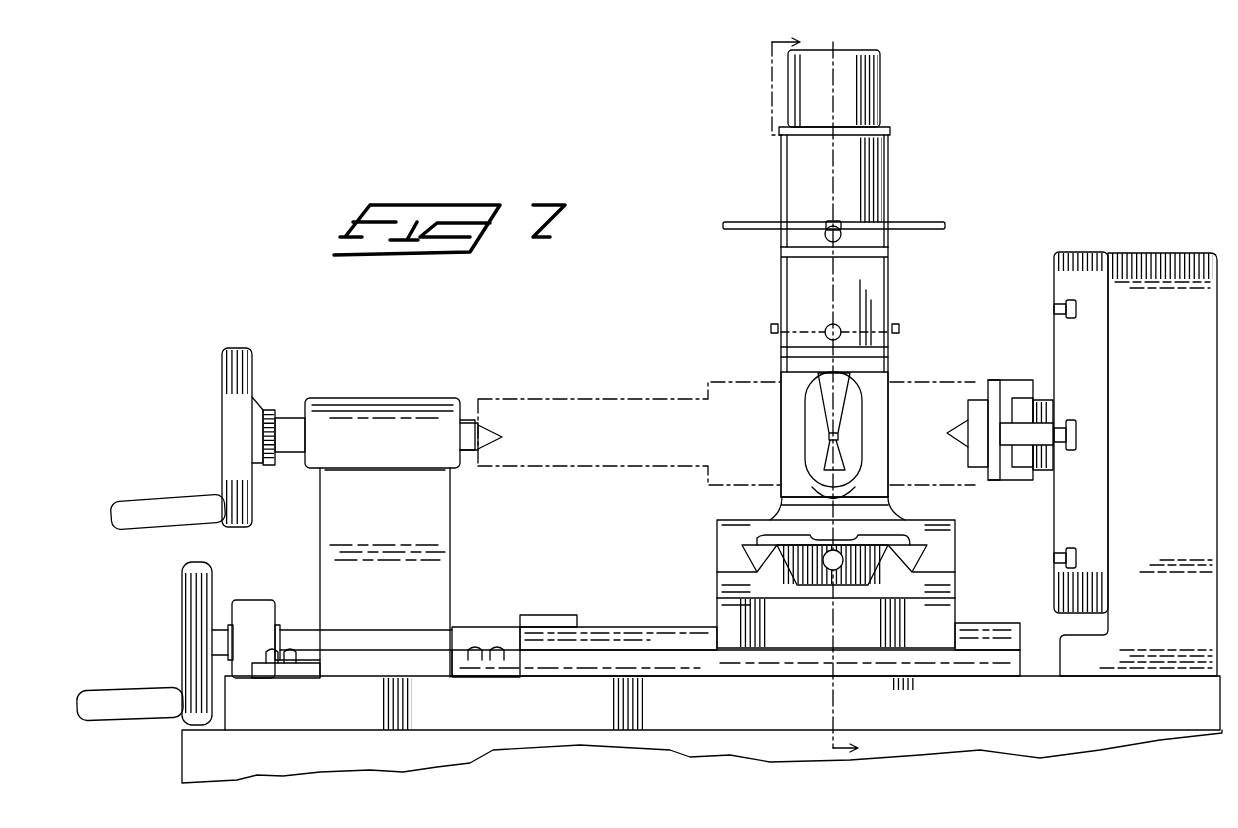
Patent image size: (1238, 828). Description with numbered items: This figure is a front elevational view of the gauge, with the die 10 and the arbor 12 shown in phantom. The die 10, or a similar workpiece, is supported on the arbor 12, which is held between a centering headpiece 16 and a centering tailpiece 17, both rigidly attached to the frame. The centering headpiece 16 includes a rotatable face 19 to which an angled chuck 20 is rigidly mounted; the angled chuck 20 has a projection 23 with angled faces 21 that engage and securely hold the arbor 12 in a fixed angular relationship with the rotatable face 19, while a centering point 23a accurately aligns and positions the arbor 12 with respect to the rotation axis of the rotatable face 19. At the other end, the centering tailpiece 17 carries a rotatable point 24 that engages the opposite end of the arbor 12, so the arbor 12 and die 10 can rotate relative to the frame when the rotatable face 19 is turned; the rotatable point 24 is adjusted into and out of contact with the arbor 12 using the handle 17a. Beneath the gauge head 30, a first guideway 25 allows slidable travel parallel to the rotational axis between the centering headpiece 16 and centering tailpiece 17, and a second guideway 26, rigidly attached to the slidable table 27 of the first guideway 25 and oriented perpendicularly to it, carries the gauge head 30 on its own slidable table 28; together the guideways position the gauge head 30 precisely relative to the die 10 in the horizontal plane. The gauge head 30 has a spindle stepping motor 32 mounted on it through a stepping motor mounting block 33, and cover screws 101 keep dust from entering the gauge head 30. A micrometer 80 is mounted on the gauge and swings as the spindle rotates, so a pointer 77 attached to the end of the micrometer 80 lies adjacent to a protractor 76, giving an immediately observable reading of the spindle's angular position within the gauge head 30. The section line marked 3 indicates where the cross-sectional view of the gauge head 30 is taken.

The section line 3- 3 is at (823, 396).
The die 10 is at (775, 377).
The arbor 12 is at (680, 393).
The centering headpiece 16 is at (1148, 255).
The centering tailpiece 17 is at (373, 396).
The handle 17a is at (253, 360).
The rotatable face 19 is at (1060, 253).
The angled chuck 20 is at (1015, 380).
The angled faces 21 is at (978, 400).
The projection 23 is at (968, 410).
The centering point 23a is at (957, 437).
The rotatable point 24 is at (497, 430).
The first guideway 25 is at (630, 600).
The second guideway 26 is at (710, 568).
The slidable table 27 is at (640, 625).
The slidable table 28 is at (717, 530).
The gauge head 30 is at (890, 296).
The spindle stepping motor 32 is at (870, 95).
The stepping motor mounting block 33 is at (883, 171).
The protractor 76 is at (935, 229).
The pointer 77 is at (832, 221).
The micrometer 80 is at (839, 242).
The cover screws 101 is at (771, 328).